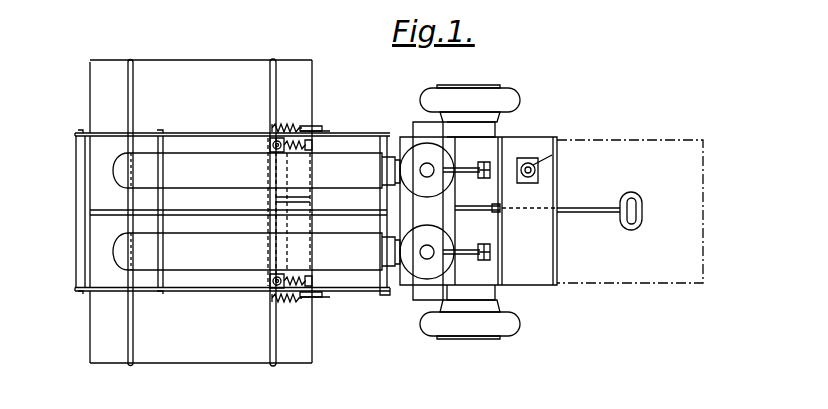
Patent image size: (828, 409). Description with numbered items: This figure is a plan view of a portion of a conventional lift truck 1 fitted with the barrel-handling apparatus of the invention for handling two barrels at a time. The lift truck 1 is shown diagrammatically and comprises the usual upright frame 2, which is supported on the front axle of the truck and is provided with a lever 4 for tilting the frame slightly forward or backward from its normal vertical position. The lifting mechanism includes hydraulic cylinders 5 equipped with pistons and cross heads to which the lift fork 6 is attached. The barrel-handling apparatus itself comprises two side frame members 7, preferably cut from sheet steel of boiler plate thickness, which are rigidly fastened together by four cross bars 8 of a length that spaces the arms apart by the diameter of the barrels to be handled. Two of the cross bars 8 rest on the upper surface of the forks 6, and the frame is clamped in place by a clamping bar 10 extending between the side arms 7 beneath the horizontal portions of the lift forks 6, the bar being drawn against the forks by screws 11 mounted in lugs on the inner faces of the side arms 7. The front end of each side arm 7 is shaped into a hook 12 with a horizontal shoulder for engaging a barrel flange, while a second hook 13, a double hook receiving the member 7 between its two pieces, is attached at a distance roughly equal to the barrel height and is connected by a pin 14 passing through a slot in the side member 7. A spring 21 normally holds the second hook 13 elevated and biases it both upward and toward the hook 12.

The lift truck 1 is at (540, 290).
The upright frame 2 is at (412, 302).
The lever 4 is at (478, 211).
The hydraulic cylinder 5 is at (445, 232).
The lift fork 6 is at (256, 212).
The side frame member 7 is at (197, 133).
The cross bar 8 is at (76, 190).
The clamping bar 10 is at (290, 200).
The screw 11 is at (272, 140).
The hook 12 is at (77, 131).
The second hook 13 is at (320, 131).
The pin 14 is at (316, 126).
The spring 21 is at (288, 126).